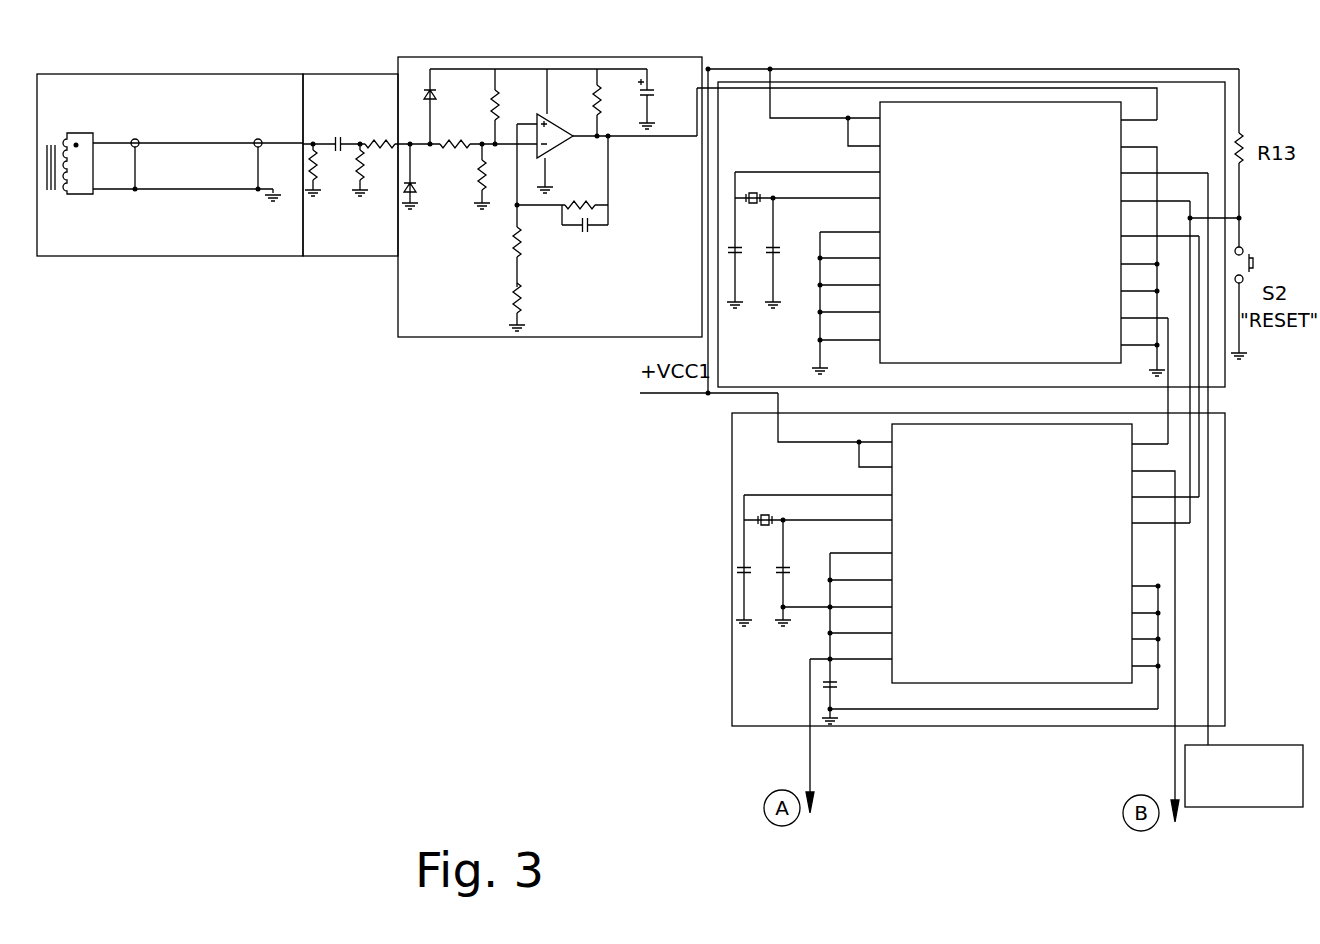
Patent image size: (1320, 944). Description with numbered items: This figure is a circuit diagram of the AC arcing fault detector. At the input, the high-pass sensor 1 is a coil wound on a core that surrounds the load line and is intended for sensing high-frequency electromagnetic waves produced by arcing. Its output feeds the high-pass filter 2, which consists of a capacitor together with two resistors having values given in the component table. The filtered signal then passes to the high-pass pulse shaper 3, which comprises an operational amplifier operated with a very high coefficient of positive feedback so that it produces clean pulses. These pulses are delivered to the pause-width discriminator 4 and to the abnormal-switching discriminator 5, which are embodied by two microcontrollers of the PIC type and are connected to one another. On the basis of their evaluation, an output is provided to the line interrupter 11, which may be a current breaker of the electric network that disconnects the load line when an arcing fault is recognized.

The high-pass sensor 1 is at (162, 257).
The high-pass filter 2 is at (332, 257).
The high-pass pulse shaper 3 is at (465, 337).
The pause-width discriminator 4 is at (950, 100).
The abnormal-switching discriminator 5 is at (731, 603).
The line interrupter 11 is at (1246, 745).